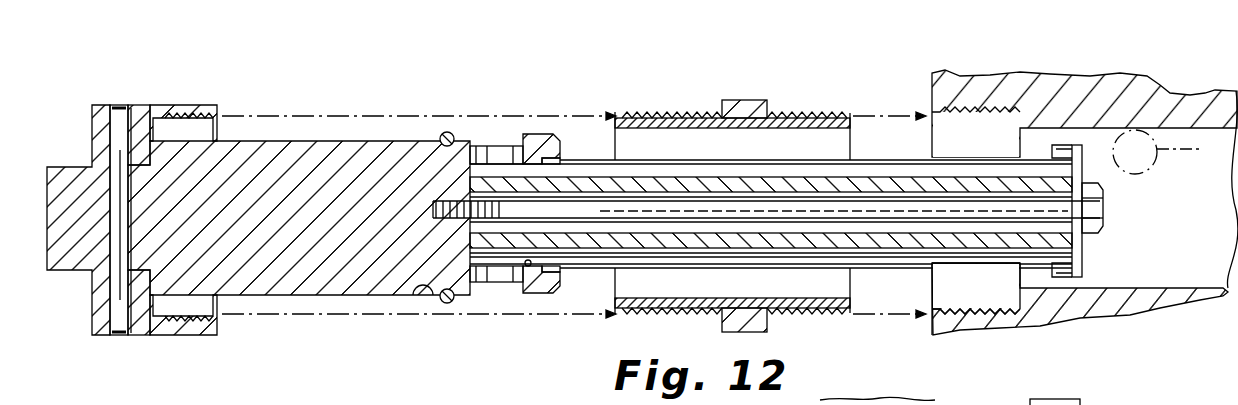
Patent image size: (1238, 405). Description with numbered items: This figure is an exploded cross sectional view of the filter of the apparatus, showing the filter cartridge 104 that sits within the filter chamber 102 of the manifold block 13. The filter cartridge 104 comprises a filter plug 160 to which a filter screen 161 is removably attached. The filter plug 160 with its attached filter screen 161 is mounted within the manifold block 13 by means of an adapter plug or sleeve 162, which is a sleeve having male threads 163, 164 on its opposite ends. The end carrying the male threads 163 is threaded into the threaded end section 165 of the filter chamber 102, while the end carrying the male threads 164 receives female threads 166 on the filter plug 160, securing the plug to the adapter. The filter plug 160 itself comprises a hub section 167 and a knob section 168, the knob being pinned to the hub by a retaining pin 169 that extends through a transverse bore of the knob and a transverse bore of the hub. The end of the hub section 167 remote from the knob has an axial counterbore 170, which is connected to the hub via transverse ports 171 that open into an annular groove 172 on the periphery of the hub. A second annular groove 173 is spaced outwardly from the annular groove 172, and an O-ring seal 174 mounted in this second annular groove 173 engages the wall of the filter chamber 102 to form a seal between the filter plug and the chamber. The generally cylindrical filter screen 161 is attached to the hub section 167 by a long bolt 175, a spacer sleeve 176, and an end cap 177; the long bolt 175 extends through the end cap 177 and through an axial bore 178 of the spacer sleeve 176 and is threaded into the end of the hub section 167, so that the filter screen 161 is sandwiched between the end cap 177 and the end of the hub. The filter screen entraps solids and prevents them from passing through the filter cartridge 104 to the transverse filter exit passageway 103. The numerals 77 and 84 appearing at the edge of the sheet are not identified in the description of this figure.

The manifold block 13 is at (1113, 84).
The adjacent figure element 77 is at (1177, 404).
The adjacent figure element 84 is at (1103, 401).
The filter chamber 102 is at (1205, 275).
The transverse filter exit passageway 103 is at (1174, 152).
The filter cartridge 104 is at (565, 98).
The filter plug 160 is at (339, 338).
The filter screen 161 is at (892, 269).
The adapter plug or sleeve 162 is at (743, 100).
The male threads 163 is at (807, 110).
The male threads 164 is at (705, 111).
The threaded end section 165 is at (978, 104).
The female threads 166 is at (203, 104).
The hub section 167 is at (337, 186).
The knob section 168 is at (147, 340).
The retaining pin 169 is at (117, 337).
The axial counterbore 170 is at (527, 266).
The transverse ports 171 is at (503, 278).
The annular groove 172 is at (475, 140).
The second annular groove 173 is at (412, 297).
The O-ring seal 174 is at (447, 304).
The long bolt 175 is at (1103, 206).
The spacer sleeve 176 is at (800, 249).
The end cap 177 is at (1082, 260).
The axial bore 178 is at (753, 213).